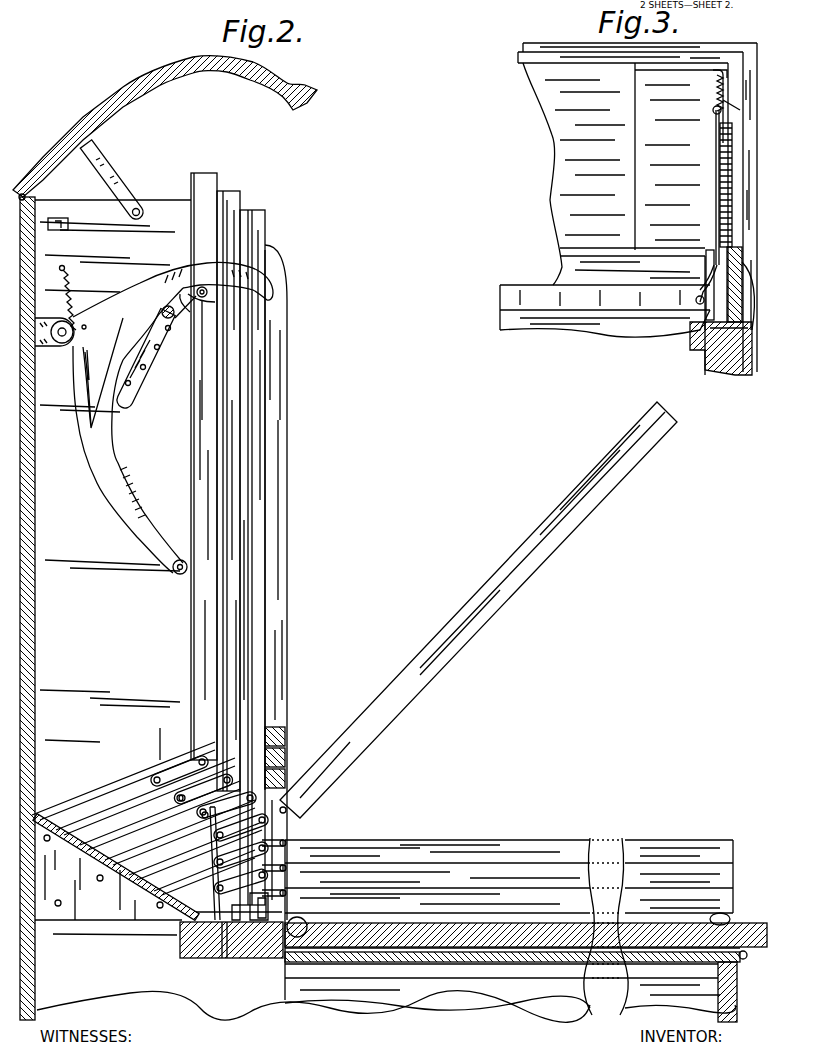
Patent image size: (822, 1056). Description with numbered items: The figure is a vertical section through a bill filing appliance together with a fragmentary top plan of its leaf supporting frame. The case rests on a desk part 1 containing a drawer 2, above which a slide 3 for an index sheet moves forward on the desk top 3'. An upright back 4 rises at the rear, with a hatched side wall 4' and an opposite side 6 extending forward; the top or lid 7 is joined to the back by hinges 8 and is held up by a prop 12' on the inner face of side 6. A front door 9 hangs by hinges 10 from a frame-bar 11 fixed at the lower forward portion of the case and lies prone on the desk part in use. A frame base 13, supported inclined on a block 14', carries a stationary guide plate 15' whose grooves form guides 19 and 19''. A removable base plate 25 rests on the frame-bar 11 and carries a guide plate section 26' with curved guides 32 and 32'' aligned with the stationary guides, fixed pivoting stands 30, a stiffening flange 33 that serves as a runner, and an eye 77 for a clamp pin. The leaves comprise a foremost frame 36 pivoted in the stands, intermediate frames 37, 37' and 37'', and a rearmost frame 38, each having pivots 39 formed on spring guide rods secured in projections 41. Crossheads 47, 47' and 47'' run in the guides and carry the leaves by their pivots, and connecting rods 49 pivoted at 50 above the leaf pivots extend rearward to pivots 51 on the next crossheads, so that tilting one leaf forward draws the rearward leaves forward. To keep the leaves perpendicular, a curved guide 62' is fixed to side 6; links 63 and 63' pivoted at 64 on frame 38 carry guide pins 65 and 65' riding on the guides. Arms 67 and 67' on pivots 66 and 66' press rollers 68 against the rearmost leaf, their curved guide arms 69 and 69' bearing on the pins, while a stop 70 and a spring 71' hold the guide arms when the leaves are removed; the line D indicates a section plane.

In FIG. 2, the desk part 1 is at (530, 1006).
In FIG. 2, the drawer 2 is at (737, 995).
In FIG. 2, the slide 3 is at (501, 994).
In FIG. 2, the desk top 3' is at (512, 990).
In FIG. 3, the upright back 4 is at (637, 38).
In FIG. 2, the side wall 4' is at (105, 608).
In FIG. 2, the side 6 is at (283, 545).
In FIG. 3, the side 6 is at (745, 125).
In FIG. 2, the top or lid 7 is at (118, 90).
In FIG. 2, the hinges 8 is at (20, 200).
In FIG. 2, the front door 9 is at (388, 950).
In FIG. 3, the front door 9 is at (738, 376).
In FIG. 2, the hinges 10 is at (307, 937).
In FIG. 2, the frame-bar 11 is at (223, 958).
In FIG. 2, the prop 12' is at (117, 178).
In FIG. 2, the frame base 13 is at (76, 852).
In FIG. 3, the frame base 13 is at (565, 158).
In FIG. 2, the block 14' is at (312, 971).
In FIG. 2, the guide plate 15' is at (133, 788).
In FIG. 3, the guide plate 15' is at (757, 98).
In FIG. 2, the guide 19 is at (153, 878).
In FIG. 2, the guide 19'' is at (148, 823).
In FIG. 2, the base plate 25 is at (227, 958).
In FIG. 3, the base plate 25 is at (575, 277).
In FIG. 2, the guide plate section 26' is at (295, 713).
In FIG. 3, the guide plate section 26' is at (721, 356).
In FIG. 2, the pivoting stand 30 is at (262, 958).
In FIG. 2, the guide 32 is at (116, 888).
In FIG. 2, the guide 32'' is at (306, 747).
In FIG. 3, the up-turned flange or rib 33 is at (572, 252).
In FIG. 2, the foremost leaf frame 36 is at (735, 890).
In FIG. 2, the intermediate leaf frame 37 is at (528, 920).
In FIG. 2, the intermediate leaf frame 37' is at (478, 610).
In FIG. 2, the intermediate leaf frame 37'' is at (246, 471).
In FIG. 3, the intermediate leaf frame 37'' is at (581, 323).
In FIG. 2, the rearmost leaf frame 38 is at (205, 190).
In FIG. 3, the rearmost leaf frame 38 is at (510, 298).
In FIG. 2, the pivot 39 is at (200, 762).
In FIG. 2, the projection 41 is at (258, 920).
In FIG. 2, the crosshead 47 is at (170, 863).
In FIG. 2, the crosshead 47' is at (302, 817).
In FIG. 2, the crosshead 47'' is at (172, 764).
In FIG. 2, the connecting rod 49 is at (280, 792).
In FIG. 2, the pivot 50 is at (290, 870).
In FIG. 2, the pivot 51 is at (217, 982).
In FIG. 2, the curved guide 62' is at (148, 357).
In FIG. 3, the curved guide 62' is at (756, 222).
In FIG. 2, the link 63 is at (257, 322).
In FIG. 3, the link 63' is at (677, 306).
In FIG. 2, the pivot 64 is at (212, 294).
In FIG. 2, the guide pin 65 is at (255, 337).
In FIG. 3, the guide pin 65' is at (761, 336).
In FIG. 2, the pivot 66 is at (54, 355).
In FIG. 3, the pivot 66' is at (698, 113).
In FIG. 2, the arm 67 is at (119, 430).
In FIG. 3, the arm 67' is at (690, 254).
In FIG. 2, the roller 68 is at (176, 576).
In FIG. 3, the roller 68 is at (698, 302).
In FIG. 2, the curved guide arm 69 is at (198, 295).
In FIG. 3, the curved guide arm 69' is at (693, 187).
In FIG. 2, the stop 70 is at (140, 238).
In FIG. 2, the spring 71' is at (90, 298).
In FIG. 3, the spring 71' is at (703, 110).
In FIG. 2, the eye 77 is at (263, 960).
In FIG. 2, the link assembly D is at (159, 733).